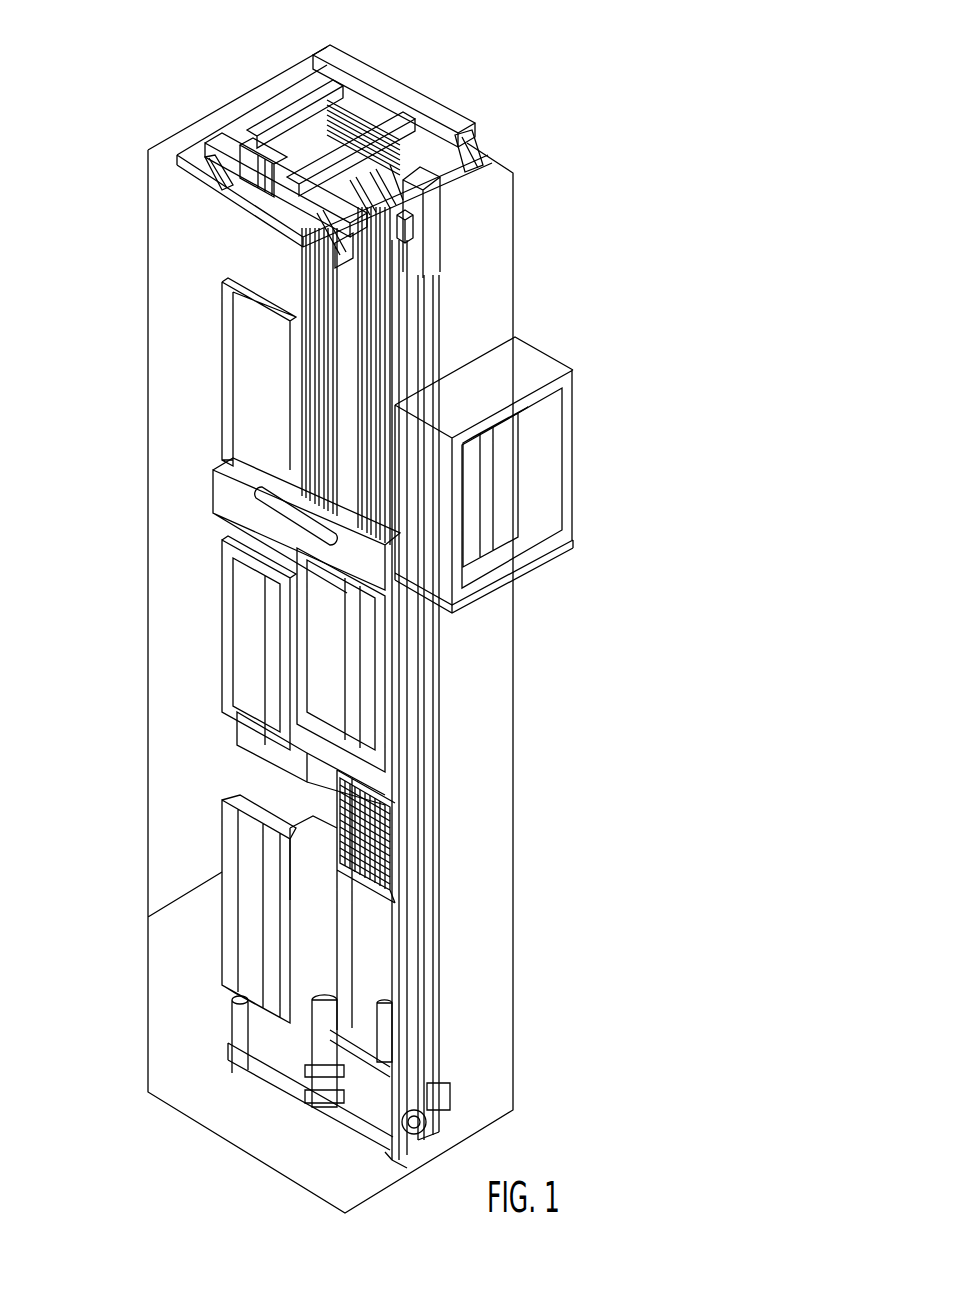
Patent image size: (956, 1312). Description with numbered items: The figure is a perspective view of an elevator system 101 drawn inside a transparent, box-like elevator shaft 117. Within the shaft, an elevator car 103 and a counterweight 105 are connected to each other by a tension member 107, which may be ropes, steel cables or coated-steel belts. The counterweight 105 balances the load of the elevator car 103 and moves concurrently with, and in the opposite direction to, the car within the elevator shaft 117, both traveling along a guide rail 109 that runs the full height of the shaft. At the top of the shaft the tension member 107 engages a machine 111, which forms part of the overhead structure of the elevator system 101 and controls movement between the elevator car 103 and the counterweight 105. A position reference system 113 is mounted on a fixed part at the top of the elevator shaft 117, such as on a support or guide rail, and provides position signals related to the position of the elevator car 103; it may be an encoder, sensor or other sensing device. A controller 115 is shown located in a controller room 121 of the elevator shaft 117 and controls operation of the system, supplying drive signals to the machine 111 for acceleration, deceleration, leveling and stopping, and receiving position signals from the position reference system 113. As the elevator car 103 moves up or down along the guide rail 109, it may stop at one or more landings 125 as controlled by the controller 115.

The elevator system 101 is at (532, 105).
The elevator car 103 is at (335, 680).
The counterweight 105 is at (395, 860).
The tension member 107 is at (340, 385).
The guide rail 109 is at (415, 775).
The machine 111 is at (247, 140).
The position reference system 113 is at (405, 232).
The controller 115 is at (515, 484).
The elevator shaft 117 is at (192, 767).
The controller room 121 is at (575, 372).
The landings 125 is at (222, 365).